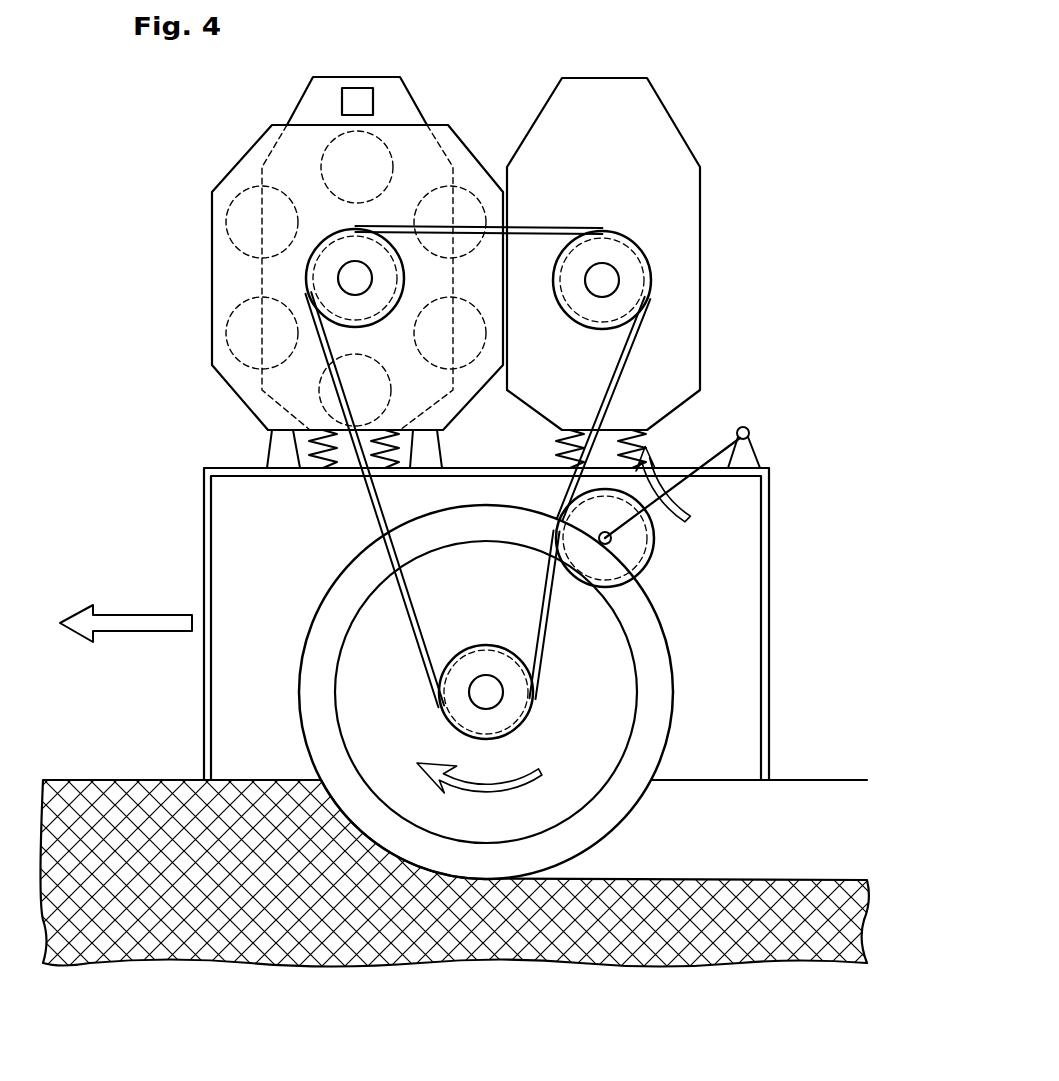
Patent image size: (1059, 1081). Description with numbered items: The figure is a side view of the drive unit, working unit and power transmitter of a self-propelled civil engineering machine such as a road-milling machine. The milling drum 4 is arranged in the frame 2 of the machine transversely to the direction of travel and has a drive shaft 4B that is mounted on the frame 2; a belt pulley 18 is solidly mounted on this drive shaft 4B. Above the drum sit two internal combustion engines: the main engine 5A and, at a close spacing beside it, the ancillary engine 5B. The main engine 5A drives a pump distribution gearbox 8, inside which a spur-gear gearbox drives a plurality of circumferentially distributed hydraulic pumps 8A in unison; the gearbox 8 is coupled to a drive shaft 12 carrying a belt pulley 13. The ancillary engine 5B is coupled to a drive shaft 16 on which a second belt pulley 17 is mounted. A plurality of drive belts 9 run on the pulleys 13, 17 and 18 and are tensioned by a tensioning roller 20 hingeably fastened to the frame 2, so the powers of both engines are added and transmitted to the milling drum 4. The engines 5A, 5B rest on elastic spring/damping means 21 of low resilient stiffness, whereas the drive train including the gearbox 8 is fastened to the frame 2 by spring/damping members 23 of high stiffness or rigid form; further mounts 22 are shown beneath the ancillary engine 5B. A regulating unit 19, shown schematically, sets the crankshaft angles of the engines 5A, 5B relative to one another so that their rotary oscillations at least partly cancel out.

The frame of the machine 2 is at (769, 672).
The milling drum 4 is at (620, 680).
The drive shaft 4B is at (487, 688).
The main engine 5A is at (400, 110).
The ancillary engine 5B is at (650, 110).
The pump distribution gearbox 8 is at (245, 170).
The hydraulic pumps 8A is at (237, 222).
The drive belts 9 is at (415, 647).
The drive shaft 12 is at (348, 280).
The belt pulley 13 is at (333, 238).
The drive shaft 16 is at (612, 283).
The second belt pulley 17 is at (633, 247).
The belt pulley 18 is at (470, 643).
The regulating unit 19 is at (357, 95).
The tensioning roller 20 is at (650, 540).
The elastic spring/damping means 21 is at (390, 468).
The springs 22 is at (647, 440).
The spring/damping members 23 is at (432, 450).